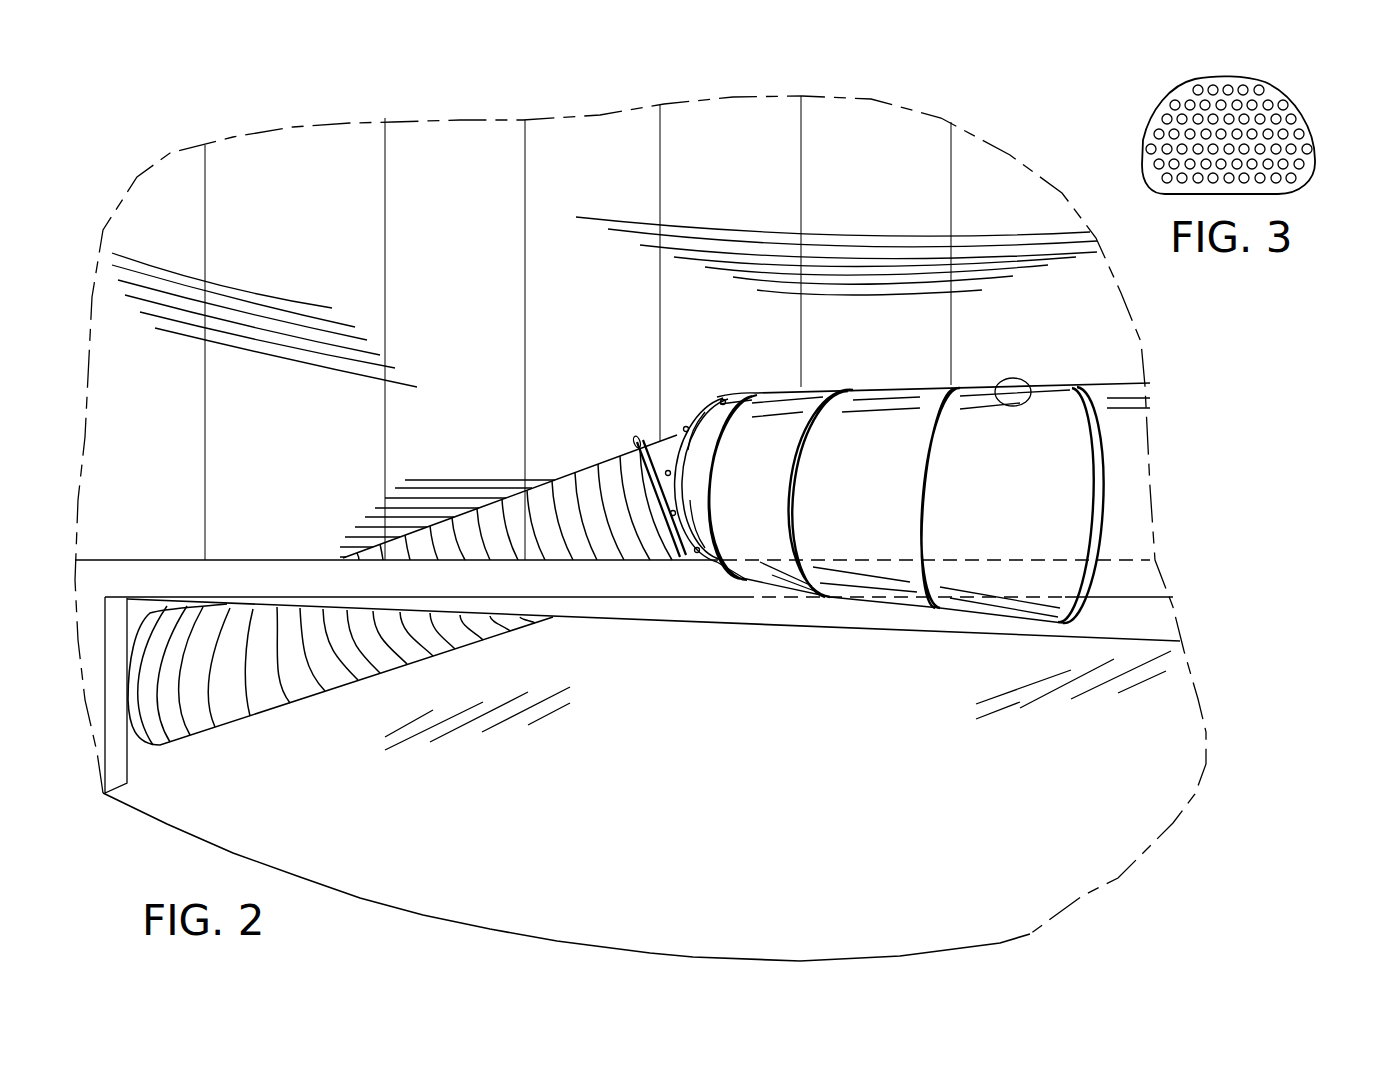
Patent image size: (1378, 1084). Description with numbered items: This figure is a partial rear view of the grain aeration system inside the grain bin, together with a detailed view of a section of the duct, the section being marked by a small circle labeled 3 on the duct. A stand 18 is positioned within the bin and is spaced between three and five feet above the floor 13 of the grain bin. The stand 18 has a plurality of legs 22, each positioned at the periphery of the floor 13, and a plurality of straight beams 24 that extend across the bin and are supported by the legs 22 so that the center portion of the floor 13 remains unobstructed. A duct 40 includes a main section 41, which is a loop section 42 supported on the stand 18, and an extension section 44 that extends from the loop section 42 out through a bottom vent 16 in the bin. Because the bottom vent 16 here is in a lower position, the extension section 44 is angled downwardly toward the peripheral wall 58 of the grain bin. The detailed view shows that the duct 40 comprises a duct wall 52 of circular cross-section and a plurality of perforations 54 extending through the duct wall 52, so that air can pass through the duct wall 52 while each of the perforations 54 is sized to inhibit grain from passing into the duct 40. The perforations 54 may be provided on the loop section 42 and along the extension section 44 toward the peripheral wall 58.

In FIG. 2, the floor 13 is at (435, 811).
In FIG. 2, the bottom vent 16 is at (147, 617).
In FIG. 2, the stand 18 is at (291, 524).
In FIG. 2, the legs 22 is at (118, 762).
In FIG. 2, the beams 24 is at (265, 577).
In FIG. 2, the duct 40 is at (672, 381).
In FIG. 2, the main section 41 is at (1066, 377).
In FIG. 2, the loop section 42 is at (883, 410).
In FIG. 2, the extension section 44 is at (303, 693).
In FIG. 2, the peripheral wall 58 is at (245, 308).
In FIG. 2, the section indicator for FIG. 3 is at (1011, 378).
In FIG. 3, the duct wall 52 is at (1310, 173).
In FIG. 3, the perforations 54 is at (1252, 78).